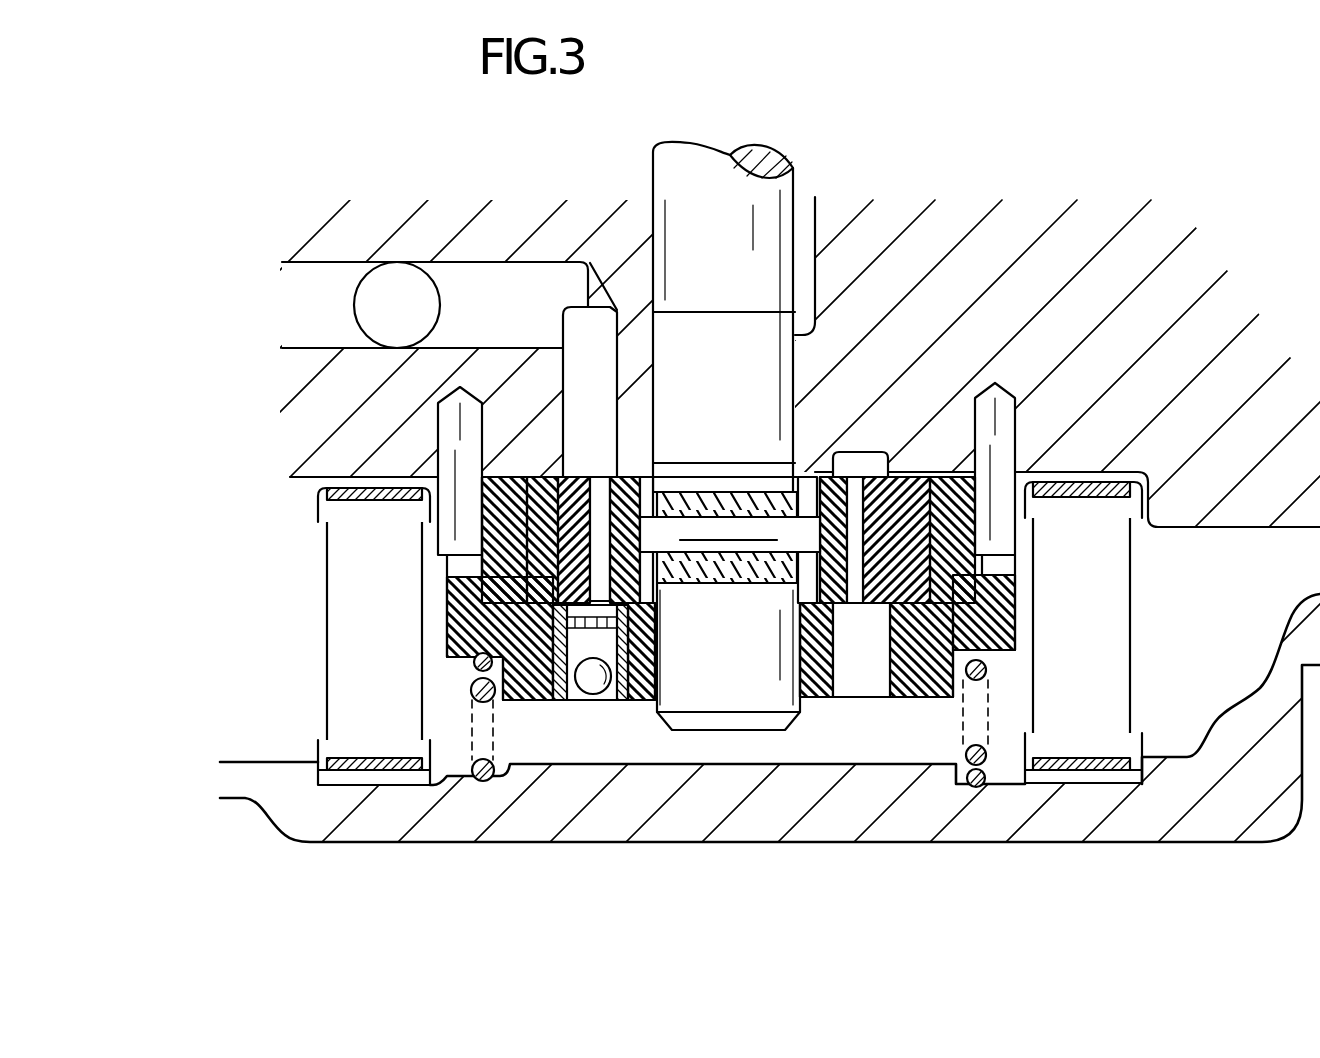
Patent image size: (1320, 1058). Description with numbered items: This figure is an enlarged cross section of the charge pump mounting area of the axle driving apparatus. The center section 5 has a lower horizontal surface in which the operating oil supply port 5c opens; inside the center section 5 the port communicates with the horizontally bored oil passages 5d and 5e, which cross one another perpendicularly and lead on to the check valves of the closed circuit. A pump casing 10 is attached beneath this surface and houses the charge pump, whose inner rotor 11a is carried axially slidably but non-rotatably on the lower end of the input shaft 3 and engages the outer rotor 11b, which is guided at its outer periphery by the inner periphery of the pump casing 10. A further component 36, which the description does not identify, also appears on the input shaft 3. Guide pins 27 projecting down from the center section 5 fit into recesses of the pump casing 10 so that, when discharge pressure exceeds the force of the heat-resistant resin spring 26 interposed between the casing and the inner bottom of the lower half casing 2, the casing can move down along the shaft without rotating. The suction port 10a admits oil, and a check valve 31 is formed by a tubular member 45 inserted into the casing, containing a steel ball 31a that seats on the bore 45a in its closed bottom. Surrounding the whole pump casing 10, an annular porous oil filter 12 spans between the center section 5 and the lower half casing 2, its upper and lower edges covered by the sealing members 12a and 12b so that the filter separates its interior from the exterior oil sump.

The lower half casing 2 is at (1127, 820).
The input shaft 3 is at (727, 712).
The center section 5 is at (1117, 262).
The operating oil supply port 5c is at (617, 365).
The oil passage 5d is at (332, 266).
The oil passage 5e is at (398, 268).
The pump casing 10 is at (1013, 636).
The suction port 10a is at (860, 690).
The inner rotor 11a is at (827, 477).
The outer rotor 11b is at (898, 477).
The oil filter 12 is at (325, 632).
The sealing member 12a is at (323, 502).
The sealing member 12b is at (320, 752).
The spring 26 is at (480, 774).
The guide pins 27 is at (472, 392).
The check valve 31 is at (594, 750).
The steel ball 31a is at (583, 702).
The collar 36 is at (708, 530).
The tubular member 45 is at (571, 677).
The bore 45a is at (601, 694).